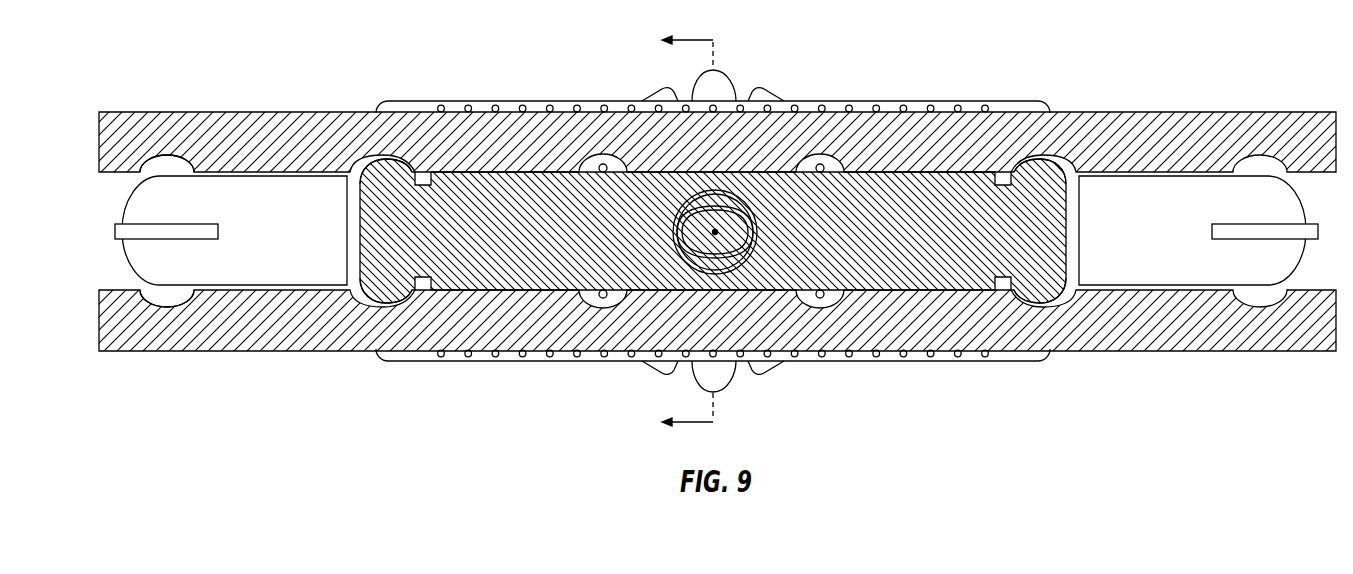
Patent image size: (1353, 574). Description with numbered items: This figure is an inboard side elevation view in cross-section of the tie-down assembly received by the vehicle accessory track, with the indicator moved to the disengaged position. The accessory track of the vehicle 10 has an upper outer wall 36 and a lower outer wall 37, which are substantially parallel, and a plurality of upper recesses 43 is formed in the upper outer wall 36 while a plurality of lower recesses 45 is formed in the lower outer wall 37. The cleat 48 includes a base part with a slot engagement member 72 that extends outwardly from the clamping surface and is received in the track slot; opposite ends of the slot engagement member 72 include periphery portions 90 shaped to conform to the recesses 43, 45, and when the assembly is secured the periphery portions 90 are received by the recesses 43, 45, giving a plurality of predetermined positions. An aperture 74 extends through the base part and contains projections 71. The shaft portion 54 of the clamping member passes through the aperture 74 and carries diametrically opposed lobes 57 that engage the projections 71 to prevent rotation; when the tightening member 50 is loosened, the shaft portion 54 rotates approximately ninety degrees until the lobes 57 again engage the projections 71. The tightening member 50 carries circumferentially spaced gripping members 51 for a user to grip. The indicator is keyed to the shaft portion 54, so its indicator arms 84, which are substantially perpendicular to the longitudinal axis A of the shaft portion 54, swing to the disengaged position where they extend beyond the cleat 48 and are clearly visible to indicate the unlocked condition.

The vehicle 10 is at (671, 231).
The upper outer wall 36 is at (107, 112).
The lower outer wall 37 is at (112, 344).
The upper recesses 43 is at (168, 157).
The lower recesses 45 is at (170, 306).
The cleat 48 is at (110, 255).
The tightening member 50 is at (655, 83).
The gripping members 51 is at (766, 91).
The shaft portion 54 is at (700, 223).
The lobes 57 is at (757, 228).
The projections 71 is at (742, 222).
The slot engagement member 72 is at (441, 184).
The aperture 74 is at (713, 254).
The indicator arms 84 is at (723, 73).
The periphery portions 90 is at (382, 176).
The longitudinal axis A is at (718, 234).